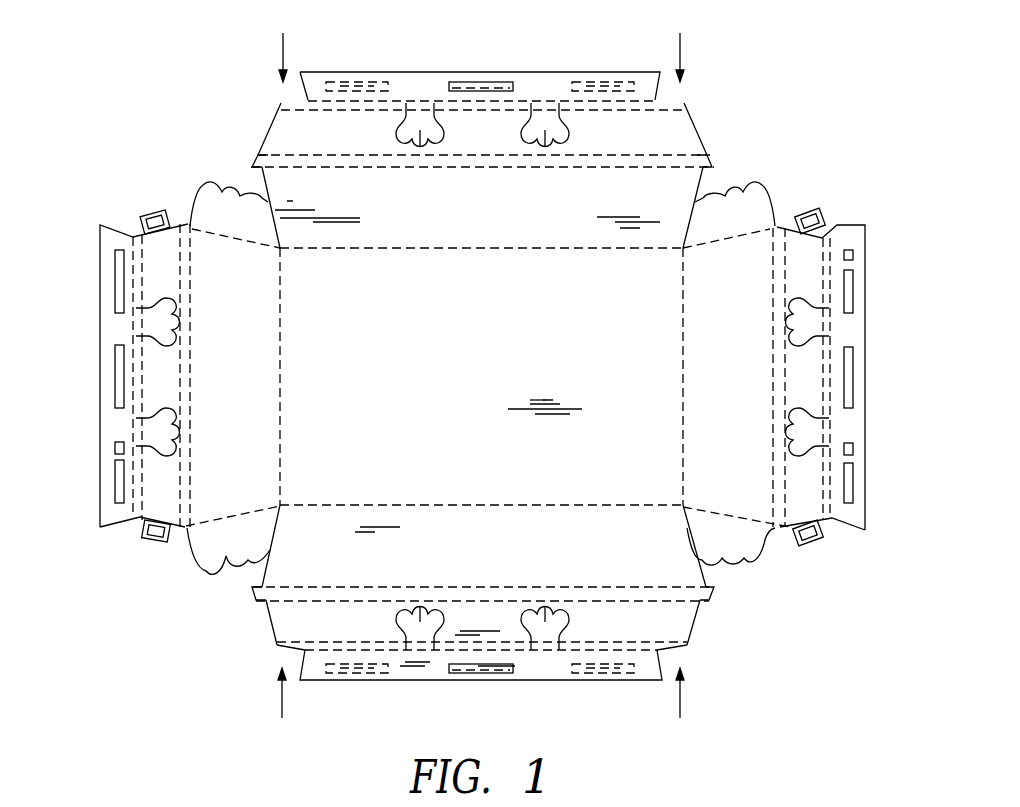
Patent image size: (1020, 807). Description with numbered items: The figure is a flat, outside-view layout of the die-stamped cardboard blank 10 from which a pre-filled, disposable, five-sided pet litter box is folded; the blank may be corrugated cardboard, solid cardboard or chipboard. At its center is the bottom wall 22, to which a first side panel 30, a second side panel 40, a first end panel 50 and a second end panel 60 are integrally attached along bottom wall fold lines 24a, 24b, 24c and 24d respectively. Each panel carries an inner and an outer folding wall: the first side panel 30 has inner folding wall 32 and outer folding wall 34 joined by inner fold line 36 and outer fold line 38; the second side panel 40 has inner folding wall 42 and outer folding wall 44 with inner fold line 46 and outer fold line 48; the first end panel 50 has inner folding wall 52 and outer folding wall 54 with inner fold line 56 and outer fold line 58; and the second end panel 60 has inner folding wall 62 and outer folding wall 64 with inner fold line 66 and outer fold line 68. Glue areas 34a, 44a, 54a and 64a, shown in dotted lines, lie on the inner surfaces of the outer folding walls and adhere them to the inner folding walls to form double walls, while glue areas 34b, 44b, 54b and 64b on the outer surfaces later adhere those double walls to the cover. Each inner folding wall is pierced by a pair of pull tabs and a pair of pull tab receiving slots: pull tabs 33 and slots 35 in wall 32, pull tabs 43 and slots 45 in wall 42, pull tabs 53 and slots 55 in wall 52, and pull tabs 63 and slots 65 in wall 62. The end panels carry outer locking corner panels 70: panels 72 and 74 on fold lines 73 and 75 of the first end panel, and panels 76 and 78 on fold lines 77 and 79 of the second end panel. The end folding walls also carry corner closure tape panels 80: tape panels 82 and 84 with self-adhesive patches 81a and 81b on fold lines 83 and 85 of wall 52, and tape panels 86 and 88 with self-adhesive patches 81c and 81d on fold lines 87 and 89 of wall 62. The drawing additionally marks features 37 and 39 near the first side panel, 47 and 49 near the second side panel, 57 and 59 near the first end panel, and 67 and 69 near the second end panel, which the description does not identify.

The cardboard blank 10 is at (822, 99).
The bottom wall 22 is at (475, 387).
The bottom wall fold line 24a is at (418, 250).
The bottom wall fold line 24b is at (472, 505).
The bottom wall fold line 24c is at (281, 394).
The bottom wall fold line 24d is at (682, 400).
The first side panel 30 is at (486, 228).
The inner folding wall 32 is at (278, 128).
The pull tabs 33 is at (421, 133).
The outer folding wall 34 is at (413, 80).
The adhesive area 34a is at (332, 84).
The adhesive area 34b is at (470, 84).
The pull tab receiving slots 35 is at (398, 132).
The inner fold line 36 is at (680, 150).
The fold line 37 is at (605, 168).
The outer fold line 38 is at (590, 115).
The fold line 39 is at (673, 104).
The second side panel 40 is at (488, 537).
The inner folding wall 42 is at (663, 632).
The pull tabs 43 is at (420, 612).
The outer folding wall 44 is at (533, 668).
The adhesive area 44a is at (337, 668).
The adhesive area 44b is at (458, 668).
The pull tab receiving slots 45 is at (437, 632).
The inner fold line 46 is at (298, 600).
The fold line 47 is at (275, 590).
The outer fold line 48 is at (345, 650).
The edge 49 is at (277, 648).
The first end panel 50 is at (250, 395).
The inner folding wall 52 is at (160, 284).
The pull tabs 53 is at (172, 328).
The outer folding wall 54 is at (120, 424).
The adhesive area 54a is at (118, 306).
The adhesive area 54b is at (118, 366).
The pull tab receiving slots 55 is at (155, 377).
The inner fold line 56 is at (180, 462).
The fold line 57 is at (188, 288).
The outer fold line 58 is at (148, 476).
The corner 59 is at (140, 521).
The second end panel 60 is at (733, 364).
The inner folding wall 62 is at (818, 467).
The pull tabs 63 is at (792, 328).
The outer folding wall 64 is at (866, 422).
The adhesive area 64a is at (846, 296).
The adhesive area 64b is at (847, 364).
The pull tab receiving slots 65 is at (801, 375).
The inner fold line 66 is at (759, 198).
The fold line 67 is at (779, 300).
The outer fold line 68 is at (833, 236).
The corner 69 is at (832, 272).
The outer locking corner panels 70 is at (748, 185).
The outer locking corner panel 72 is at (228, 192).
The fold line 73 is at (213, 235).
The outer locking corner panel 74 is at (235, 560).
The fold line 75 is at (258, 508).
The outer locking corner panel 76 is at (722, 192).
The fold line 77 is at (706, 258).
The outer locking corner panel 78 is at (745, 567).
The fold line 79 is at (748, 525).
The corner closure tape panels 80 is at (144, 211).
The self-adhesive patch 81a is at (142, 217).
The self-adhesive patch 81b is at (140, 558).
The self-adhesive patch 81c is at (824, 232).
The self-adhesive patch 81d is at (823, 530).
The corner closure tape panel 82 is at (165, 213).
The fold line 83 is at (160, 233).
The corner closure tape panel 84 is at (143, 532).
The fold line 85 is at (160, 498).
The corner closure tape panel 86 is at (818, 212).
The fold line 87 is at (807, 251).
The corner closure tape panel 88 is at (803, 532).
The fold line 89 is at (803, 523).